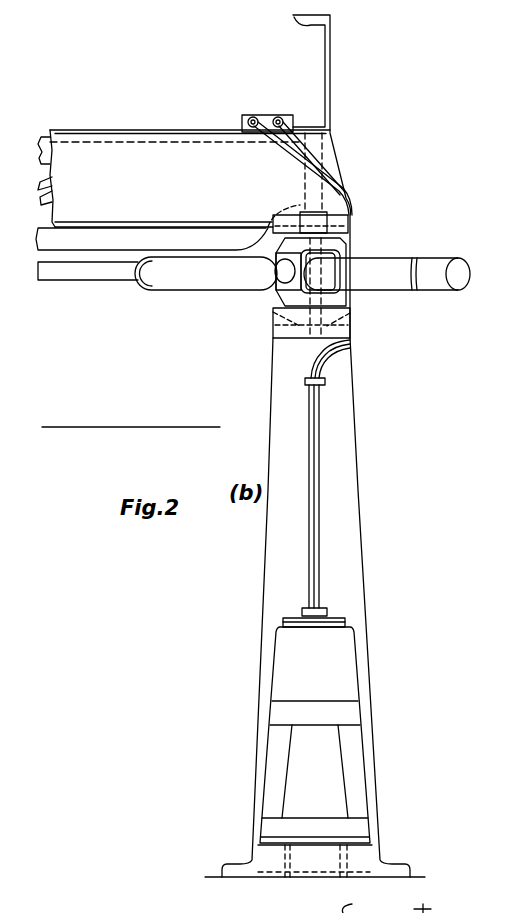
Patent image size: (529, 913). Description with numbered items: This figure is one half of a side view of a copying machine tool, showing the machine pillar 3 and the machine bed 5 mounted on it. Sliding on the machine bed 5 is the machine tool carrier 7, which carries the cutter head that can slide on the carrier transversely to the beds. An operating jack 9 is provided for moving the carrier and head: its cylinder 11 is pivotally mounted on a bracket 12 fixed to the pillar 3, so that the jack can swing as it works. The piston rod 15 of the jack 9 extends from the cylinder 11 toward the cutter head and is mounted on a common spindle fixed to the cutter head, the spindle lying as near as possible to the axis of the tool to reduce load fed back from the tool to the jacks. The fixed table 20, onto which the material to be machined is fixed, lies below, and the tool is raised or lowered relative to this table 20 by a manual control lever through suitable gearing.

The machine pillar 3 is at (342, 420).
The machine bed 5 is at (345, 312).
The machine tool carrier 7 is at (118, 165).
The operating jack 9 is at (428, 283).
The cylinder 11 is at (225, 277).
The bracket 12 is at (337, 220).
The piston rod 15 is at (105, 272).
The fixed table 20 is at (172, 424).